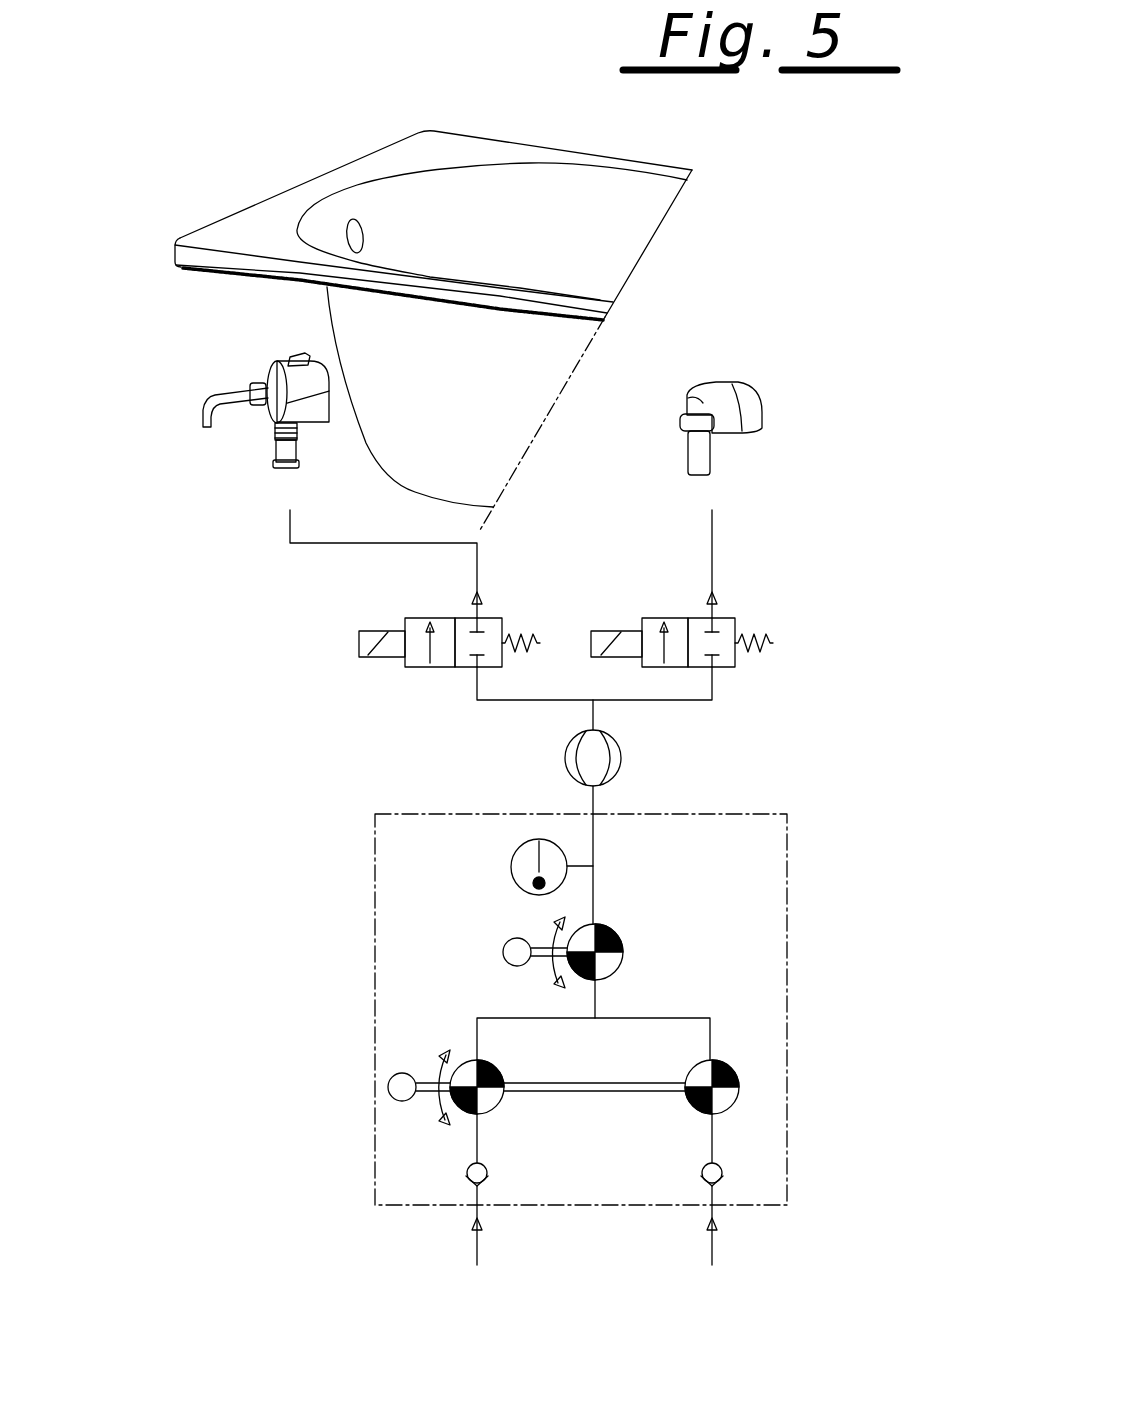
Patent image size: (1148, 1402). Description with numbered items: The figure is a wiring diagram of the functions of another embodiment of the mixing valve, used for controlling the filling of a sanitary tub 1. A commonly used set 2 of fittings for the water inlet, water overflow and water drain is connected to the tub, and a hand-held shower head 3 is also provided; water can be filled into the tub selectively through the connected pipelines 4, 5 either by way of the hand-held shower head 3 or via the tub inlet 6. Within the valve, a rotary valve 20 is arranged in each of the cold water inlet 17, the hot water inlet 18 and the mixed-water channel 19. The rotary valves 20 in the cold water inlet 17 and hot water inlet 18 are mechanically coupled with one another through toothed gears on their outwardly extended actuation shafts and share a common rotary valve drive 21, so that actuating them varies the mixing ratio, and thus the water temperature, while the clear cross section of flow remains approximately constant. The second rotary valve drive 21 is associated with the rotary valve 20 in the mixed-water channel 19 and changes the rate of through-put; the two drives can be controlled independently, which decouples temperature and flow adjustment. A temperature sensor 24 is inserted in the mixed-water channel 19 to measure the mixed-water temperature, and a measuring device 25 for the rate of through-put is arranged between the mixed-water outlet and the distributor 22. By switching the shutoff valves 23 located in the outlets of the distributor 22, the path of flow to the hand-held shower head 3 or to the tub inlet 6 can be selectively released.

The sanitary tub 1 is at (490, 230).
The set of fittings 2 is at (238, 383).
The hand-held shower head 3 is at (730, 359).
The pipeline 4 is at (712, 548).
The pipeline 5 is at (477, 558).
The tub inlet 6 is at (293, 417).
The cold water inlet 17 is at (476, 1242).
The hot water inlet 18 is at (712, 1240).
The mixed-water channel 19 is at (595, 1000).
The rotary valve 20 is at (642, 916).
The rotary valve drive 21 is at (403, 1006).
The distributor 22 is at (623, 715).
The shutoff valve 23 is at (655, 595).
The temperature sensor 24 is at (525, 840).
The measuring device 25 is at (575, 733).